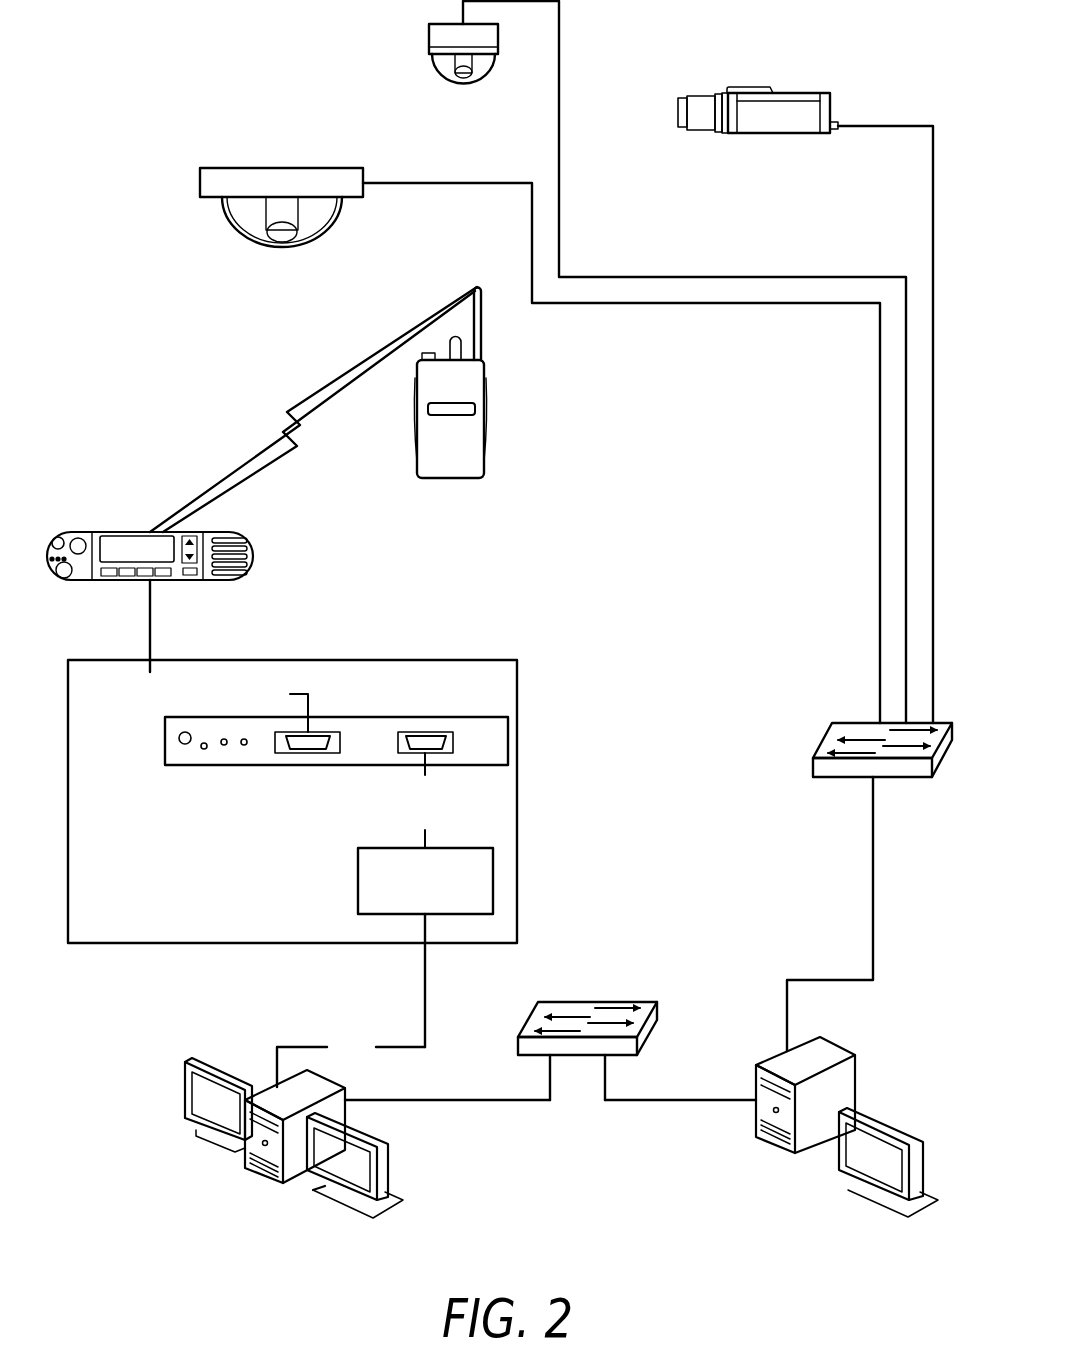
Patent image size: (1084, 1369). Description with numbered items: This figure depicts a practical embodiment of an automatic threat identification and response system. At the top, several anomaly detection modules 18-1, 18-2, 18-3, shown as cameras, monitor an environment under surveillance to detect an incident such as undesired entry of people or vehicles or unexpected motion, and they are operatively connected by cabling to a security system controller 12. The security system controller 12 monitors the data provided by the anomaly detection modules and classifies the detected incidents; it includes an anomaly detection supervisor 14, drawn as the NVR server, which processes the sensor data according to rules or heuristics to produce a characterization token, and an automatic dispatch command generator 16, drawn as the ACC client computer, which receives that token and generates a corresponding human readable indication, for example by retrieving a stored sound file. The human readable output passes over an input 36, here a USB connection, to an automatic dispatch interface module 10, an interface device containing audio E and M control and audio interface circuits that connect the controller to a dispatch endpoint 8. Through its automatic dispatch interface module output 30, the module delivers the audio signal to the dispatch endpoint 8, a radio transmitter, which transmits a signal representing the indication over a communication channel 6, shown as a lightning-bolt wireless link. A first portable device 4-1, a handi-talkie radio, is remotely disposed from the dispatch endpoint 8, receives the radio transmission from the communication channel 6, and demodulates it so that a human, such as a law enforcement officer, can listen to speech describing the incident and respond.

The first anomaly detection module 18-1 is at (200, 183).
The second anomaly detection module 18-2 is at (428, 42).
The anomaly detection module 18-3 is at (779, 100).
The communication channel 6 is at (268, 426).
The first portable device 4-1 is at (490, 430).
The dispatch endpoint 8 is at (253, 554).
The automatic dispatch interface module output 30 is at (150, 625).
The automatic dispatch interface module 10 is at (480, 660).
The security system controller 12 is at (694, 665).
The input 36 is at (422, 993).
The automatic dispatch command generator 16 is at (183, 1090).
The anomaly detection supervisor 14 is at (855, 1085).